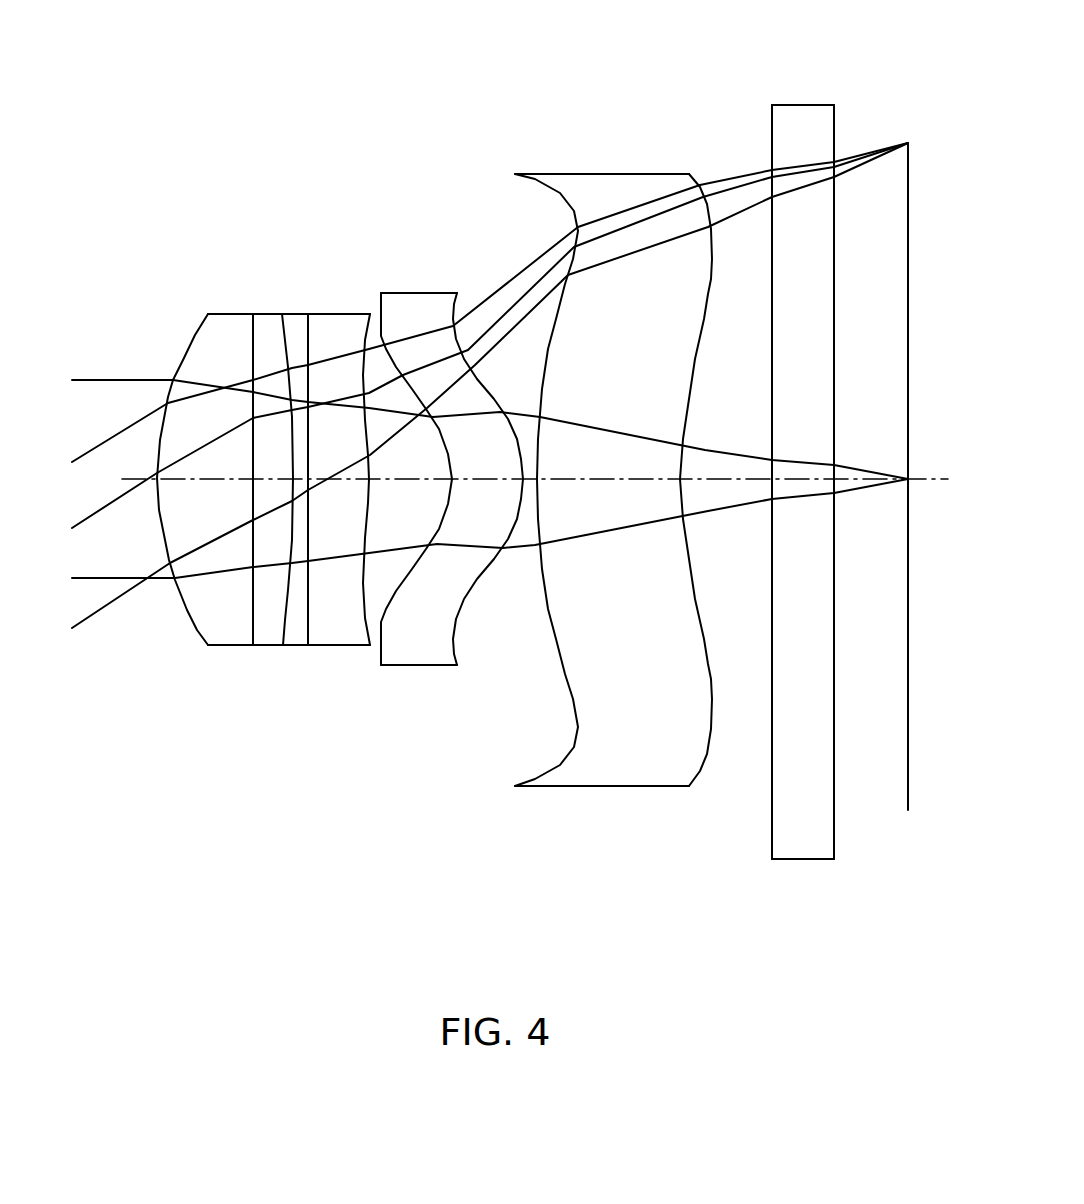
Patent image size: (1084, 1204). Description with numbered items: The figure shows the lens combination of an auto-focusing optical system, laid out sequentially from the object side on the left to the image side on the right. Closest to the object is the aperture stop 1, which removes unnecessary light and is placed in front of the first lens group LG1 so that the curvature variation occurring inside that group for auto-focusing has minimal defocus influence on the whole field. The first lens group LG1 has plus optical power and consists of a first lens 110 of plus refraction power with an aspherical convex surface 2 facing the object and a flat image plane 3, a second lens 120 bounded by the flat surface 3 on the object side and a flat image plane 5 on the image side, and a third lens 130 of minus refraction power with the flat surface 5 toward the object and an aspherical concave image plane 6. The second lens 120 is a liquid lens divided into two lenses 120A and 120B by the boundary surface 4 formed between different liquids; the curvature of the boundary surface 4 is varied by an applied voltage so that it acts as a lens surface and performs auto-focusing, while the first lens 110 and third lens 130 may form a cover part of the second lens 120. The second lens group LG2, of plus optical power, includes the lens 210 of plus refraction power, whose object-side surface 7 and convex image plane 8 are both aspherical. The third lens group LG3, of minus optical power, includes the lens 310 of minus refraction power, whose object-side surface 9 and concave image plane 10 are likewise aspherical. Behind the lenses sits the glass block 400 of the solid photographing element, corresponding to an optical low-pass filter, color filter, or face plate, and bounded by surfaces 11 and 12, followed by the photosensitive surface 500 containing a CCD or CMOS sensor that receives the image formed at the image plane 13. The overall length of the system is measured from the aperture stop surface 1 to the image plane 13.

The aperture stop 1 is at (144, 350).
The convex surface 2 is at (209, 302).
The flat image plane 3 is at (253, 302).
The boundary surface 4 is at (283, 302).
The flat image plane 5 is at (308, 302).
The concave image plane 6 is at (371, 302).
The surface facing an object 7 is at (380, 281).
The image plane 8 is at (457, 281).
The surface facing an object 9 is at (514, 162).
The image plane 10 is at (688, 162).
The filter front surface 11 is at (772, 93).
The filter rear surface 12 is at (834, 93).
The image plane 13 is at (908, 130).
The first lens 110 is at (203, 637).
The second lens 120 is at (258, 487).
The lens 120A is at (263, 645).
The lens 120B is at (300, 645).
The third lens 130 is at (348, 640).
The fifth lens 210 is at (428, 662).
The sixth lens 310 is at (622, 786).
The glass block 400 is at (807, 859).
The photosensitive surface 500 is at (908, 810).
The first lens group LG1 is at (245, 522).
The second lens group LG2 is at (448, 509).
The third lens group LG3 is at (609, 510).